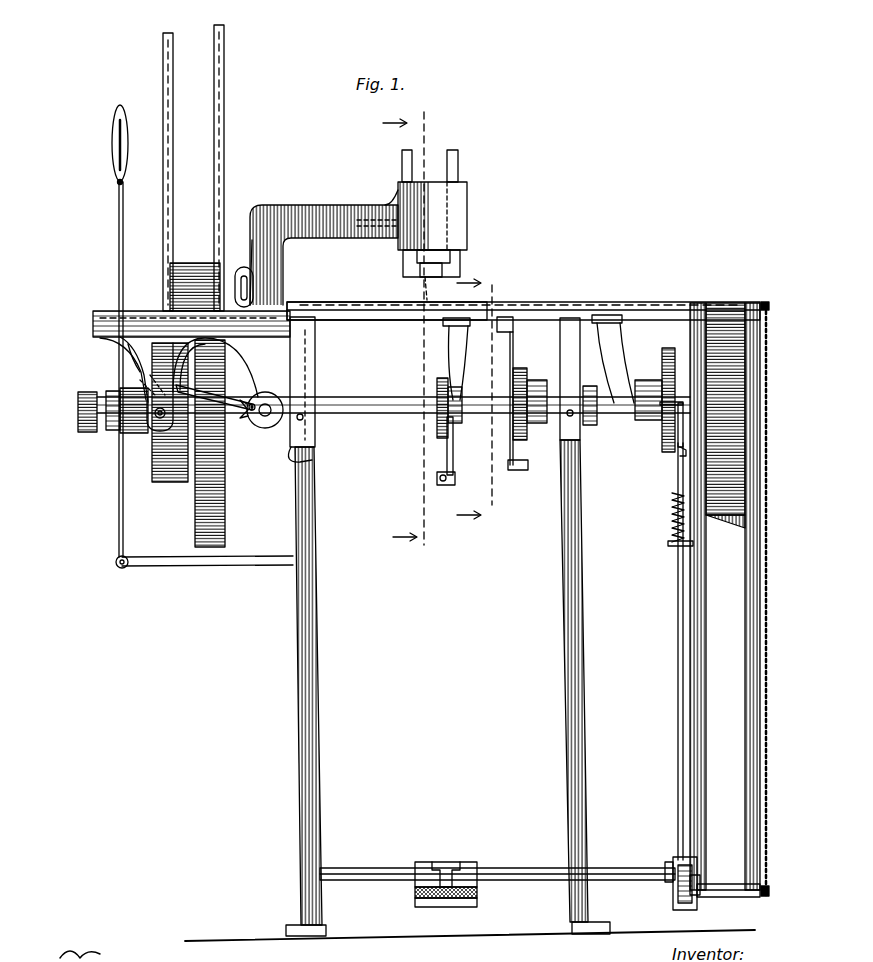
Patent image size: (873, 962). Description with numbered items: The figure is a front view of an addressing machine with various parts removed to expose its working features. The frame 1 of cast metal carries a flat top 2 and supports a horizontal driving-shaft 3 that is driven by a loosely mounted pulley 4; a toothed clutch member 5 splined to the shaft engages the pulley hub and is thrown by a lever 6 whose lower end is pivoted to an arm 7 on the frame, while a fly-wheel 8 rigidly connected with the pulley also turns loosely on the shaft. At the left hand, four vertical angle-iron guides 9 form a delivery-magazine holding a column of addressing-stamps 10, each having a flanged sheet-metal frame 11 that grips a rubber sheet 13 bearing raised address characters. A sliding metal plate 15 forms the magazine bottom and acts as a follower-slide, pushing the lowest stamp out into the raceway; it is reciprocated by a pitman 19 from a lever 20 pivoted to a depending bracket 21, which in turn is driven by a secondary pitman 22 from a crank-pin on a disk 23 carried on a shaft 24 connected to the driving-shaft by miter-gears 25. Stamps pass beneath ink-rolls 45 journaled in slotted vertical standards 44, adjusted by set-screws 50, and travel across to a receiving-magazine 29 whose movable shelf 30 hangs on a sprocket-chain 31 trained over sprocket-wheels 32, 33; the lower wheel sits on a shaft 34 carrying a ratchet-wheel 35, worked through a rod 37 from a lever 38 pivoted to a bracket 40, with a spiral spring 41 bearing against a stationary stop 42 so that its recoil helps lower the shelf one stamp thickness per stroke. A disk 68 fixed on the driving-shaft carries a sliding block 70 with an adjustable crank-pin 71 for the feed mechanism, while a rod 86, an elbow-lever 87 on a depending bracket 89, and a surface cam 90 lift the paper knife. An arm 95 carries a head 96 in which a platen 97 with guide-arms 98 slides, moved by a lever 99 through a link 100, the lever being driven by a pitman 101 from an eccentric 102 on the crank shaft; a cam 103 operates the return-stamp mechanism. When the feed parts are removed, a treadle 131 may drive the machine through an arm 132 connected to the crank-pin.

The frame 1 is at (300, 732).
The top 2 is at (428, 305).
The driving-shaft 3 is at (372, 398).
The pulley 4 is at (170, 493).
The clutch member 5 is at (112, 432).
The lever 6 is at (118, 250).
The arm 7 is at (202, 561).
The fly-wheel 8 is at (226, 522).
The vertical angle-iron guides 9 is at (214, 34).
The addressing-stamps 10 is at (192, 266).
The sheet-metal frame 11 is at (480, 393).
The sheet 13 is at (512, 392).
The sliding metal plate 15 is at (98, 333).
The pitman 19 is at (130, 352).
The lever 20 is at (140, 370).
The bracket 21 is at (157, 432).
The secondary pitman 22 is at (222, 422).
The disk 23 is at (268, 430).
The shaft 24 is at (300, 395).
The miter-gears 25 is at (260, 402).
The receiving-magazine 29 is at (707, 602).
The movable shelf 30 is at (730, 525).
The sprocket-chain 31 is at (765, 612).
The sprocket-wheel 32 is at (769, 308).
The sprocket-wheel 33 is at (769, 891).
The shaft 34 is at (735, 884).
The ratchet-wheel 35 is at (676, 880).
The rod 37 is at (666, 651).
The lever 38 is at (658, 420).
The bracket 40 is at (620, 360).
The spiral spring 41 is at (672, 520).
The stationary stop 42 is at (672, 546).
The vertical standards 44 is at (175, 266).
The ink-rolls 45 is at (242, 266).
The set-screws 50 is at (340, 271).
The disk 68 is at (666, 350).
The sliding block 70 is at (683, 430).
The crank-pin 71 is at (680, 456).
The rod 86 is at (442, 486).
The elbow-lever 87 is at (454, 460).
The depending bracket 89 is at (456, 345).
The surface cam 90 is at (440, 420).
The arm 95 is at (355, 188).
The head 96 is at (462, 205).
The platen 97 is at (420, 279).
The guide-arms 98 is at (412, 160).
The lever 99 is at (380, 193).
The link 100 is at (462, 252).
The pitman 101 is at (257, 285).
The eccentric 102 is at (312, 461).
The cam 103 is at (533, 392).
The treadle 131 is at (478, 898).
The arm 132 is at (668, 866).